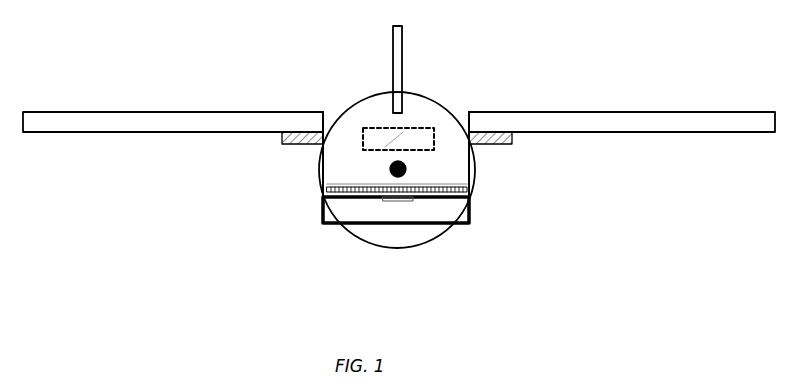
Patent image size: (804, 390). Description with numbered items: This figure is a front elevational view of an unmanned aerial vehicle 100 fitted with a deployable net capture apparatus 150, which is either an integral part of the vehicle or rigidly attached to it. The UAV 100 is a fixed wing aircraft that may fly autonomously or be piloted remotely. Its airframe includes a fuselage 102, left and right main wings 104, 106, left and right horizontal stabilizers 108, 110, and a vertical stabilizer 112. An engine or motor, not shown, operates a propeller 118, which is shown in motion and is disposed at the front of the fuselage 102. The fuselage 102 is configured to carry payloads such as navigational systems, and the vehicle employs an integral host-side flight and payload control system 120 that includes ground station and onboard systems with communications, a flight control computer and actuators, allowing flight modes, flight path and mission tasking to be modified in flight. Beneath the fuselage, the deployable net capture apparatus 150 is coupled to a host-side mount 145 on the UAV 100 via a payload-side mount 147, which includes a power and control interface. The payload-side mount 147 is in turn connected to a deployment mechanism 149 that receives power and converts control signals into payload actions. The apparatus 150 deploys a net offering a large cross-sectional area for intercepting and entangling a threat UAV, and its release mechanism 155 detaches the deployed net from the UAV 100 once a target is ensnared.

The unmanned aerial vehicle 100 is at (329, 42).
The fuselage 102 is at (323, 185).
The left main wing 104 is at (577, 112).
The right main wing 106 is at (127, 112).
The left horizontal stabilizer 108 is at (513, 138).
The right horizontal stabilizer 110 is at (282, 138).
The vertical stabilizer 112 is at (402, 69).
The propeller 118 is at (438, 104).
The host-side flight and payload control system 120 is at (430, 141).
The host-side mount 145 is at (322, 190).
The payload-side mount 147 is at (322, 196).
The deployment mechanism 149 is at (452, 190).
The deployable net capture apparatus 150 is at (470, 216).
The release mechanism 155 is at (417, 198).